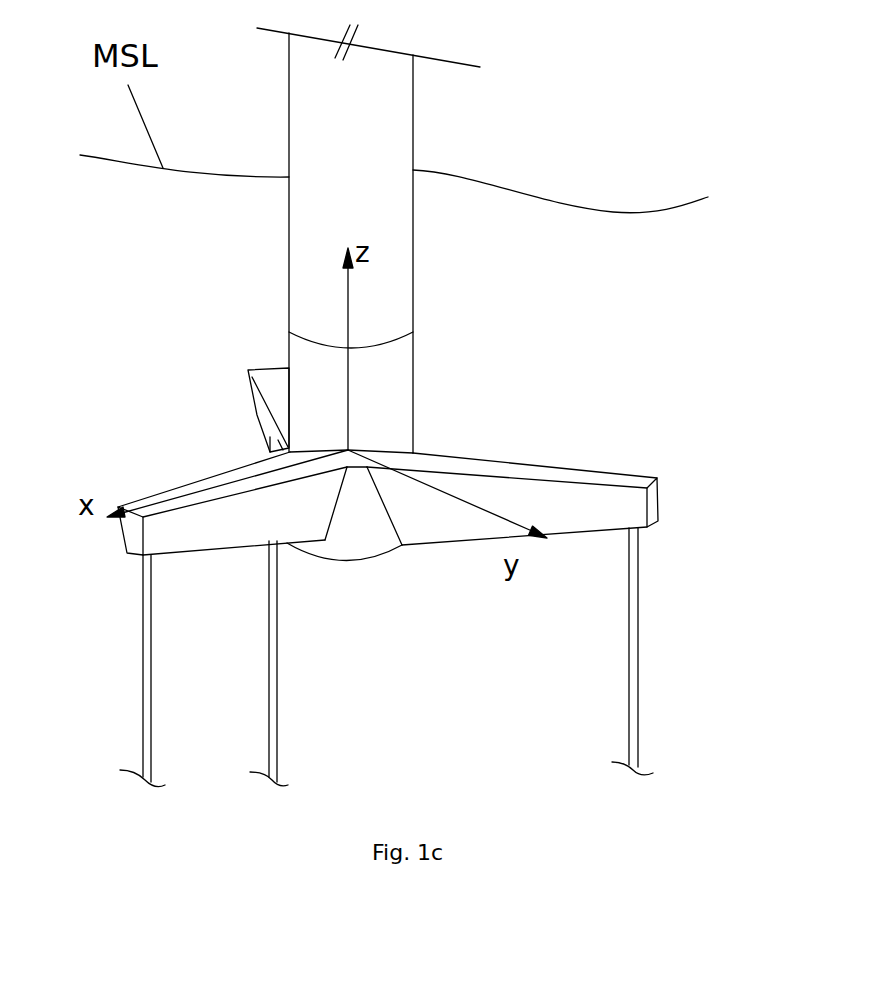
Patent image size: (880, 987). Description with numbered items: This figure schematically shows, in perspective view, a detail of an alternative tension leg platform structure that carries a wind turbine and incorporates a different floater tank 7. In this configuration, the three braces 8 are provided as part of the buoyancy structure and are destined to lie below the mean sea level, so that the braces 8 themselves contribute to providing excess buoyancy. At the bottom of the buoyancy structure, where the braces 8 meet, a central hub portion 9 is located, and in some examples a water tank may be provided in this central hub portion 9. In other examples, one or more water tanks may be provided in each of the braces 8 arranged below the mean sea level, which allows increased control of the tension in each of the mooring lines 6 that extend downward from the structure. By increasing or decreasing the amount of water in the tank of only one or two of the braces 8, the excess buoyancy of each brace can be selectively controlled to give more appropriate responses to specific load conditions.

The mooring lines 6 is at (152, 668).
The floater tank 7 is at (520, 400).
The braces 8 is at (275, 388).
The central hub portion 9 is at (350, 540).